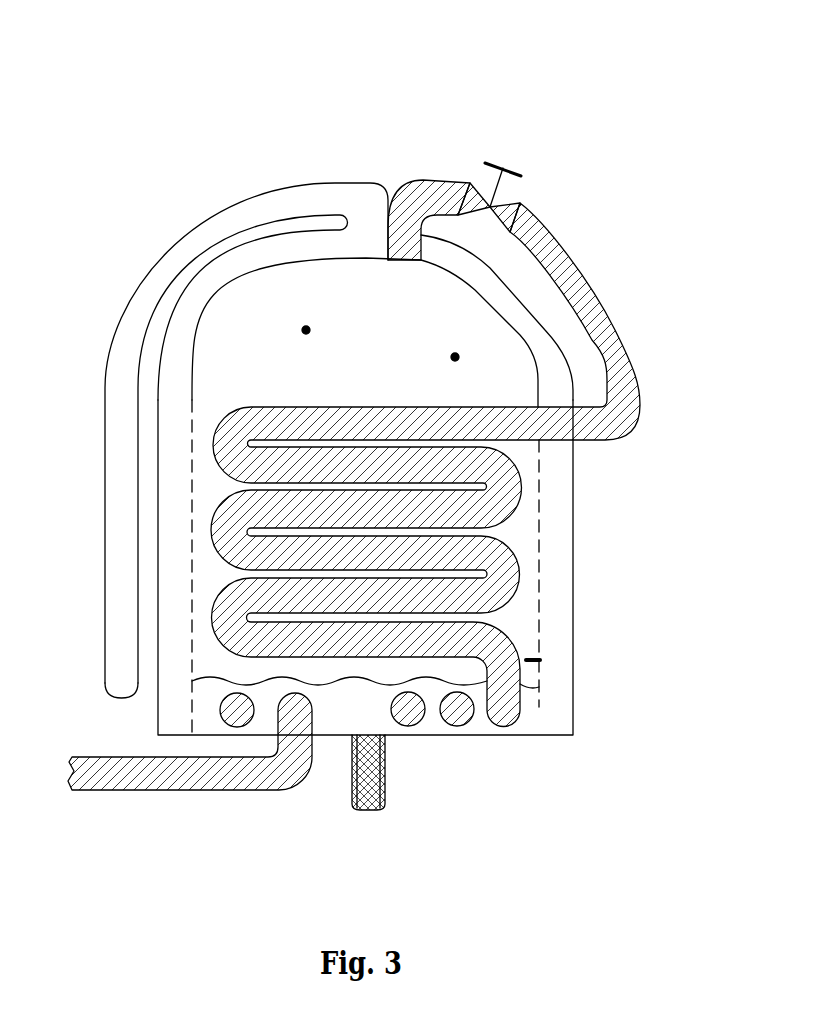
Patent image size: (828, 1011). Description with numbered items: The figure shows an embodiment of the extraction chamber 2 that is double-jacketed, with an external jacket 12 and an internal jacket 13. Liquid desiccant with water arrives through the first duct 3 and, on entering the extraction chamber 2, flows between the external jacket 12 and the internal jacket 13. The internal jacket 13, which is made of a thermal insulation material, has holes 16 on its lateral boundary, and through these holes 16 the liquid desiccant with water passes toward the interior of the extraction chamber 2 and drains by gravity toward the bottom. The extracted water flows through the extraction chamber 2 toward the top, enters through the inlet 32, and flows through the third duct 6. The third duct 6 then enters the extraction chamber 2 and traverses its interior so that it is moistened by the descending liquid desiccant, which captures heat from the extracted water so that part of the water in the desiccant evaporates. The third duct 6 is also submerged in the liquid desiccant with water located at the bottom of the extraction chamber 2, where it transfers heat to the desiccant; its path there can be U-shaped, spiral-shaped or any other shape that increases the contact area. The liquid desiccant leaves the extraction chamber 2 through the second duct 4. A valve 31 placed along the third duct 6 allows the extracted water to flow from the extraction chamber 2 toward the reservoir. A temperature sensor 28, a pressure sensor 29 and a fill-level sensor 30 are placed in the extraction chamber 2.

The extraction chamber 2 is at (147, 163).
The first duct 3 is at (104, 458).
The second duct 4 is at (387, 810).
The third duct 6 is at (560, 227).
The external jacket 12 is at (573, 557).
The internal jacket 13 is at (573, 580).
The holes 16 is at (573, 500).
The temperature sensor 28 is at (454, 357).
The pressure sensor 29 is at (305, 331).
The fill-level sensor 30 is at (540, 660).
The valve 31 is at (487, 182).
The inlet 32 is at (390, 197).